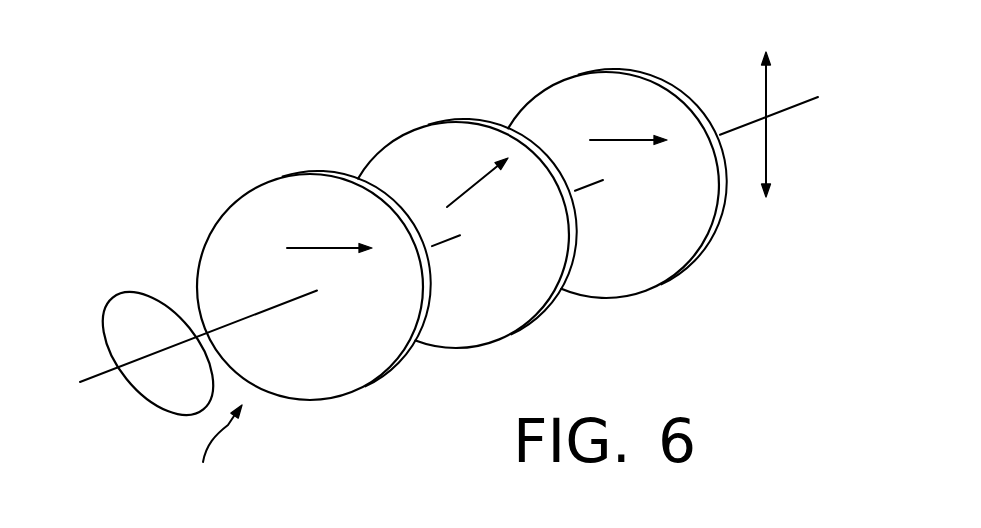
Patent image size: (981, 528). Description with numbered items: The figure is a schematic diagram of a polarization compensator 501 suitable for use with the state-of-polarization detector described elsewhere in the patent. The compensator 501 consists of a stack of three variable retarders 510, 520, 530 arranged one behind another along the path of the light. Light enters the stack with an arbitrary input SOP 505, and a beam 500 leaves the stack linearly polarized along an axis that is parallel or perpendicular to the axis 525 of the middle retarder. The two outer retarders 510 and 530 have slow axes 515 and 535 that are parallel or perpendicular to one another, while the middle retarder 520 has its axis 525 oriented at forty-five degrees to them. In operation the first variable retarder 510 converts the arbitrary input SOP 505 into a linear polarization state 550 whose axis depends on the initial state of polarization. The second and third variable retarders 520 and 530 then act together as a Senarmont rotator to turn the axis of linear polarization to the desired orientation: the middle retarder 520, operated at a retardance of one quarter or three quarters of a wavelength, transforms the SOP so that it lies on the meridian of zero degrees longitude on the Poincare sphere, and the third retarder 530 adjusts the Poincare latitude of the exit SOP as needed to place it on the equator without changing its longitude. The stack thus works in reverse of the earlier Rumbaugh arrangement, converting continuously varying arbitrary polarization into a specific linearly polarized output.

The beam 500 is at (807, 102).
The polarization compensator 501 is at (211, 447).
The arbitrary input SOP 505 is at (114, 298).
The variable retarder 510 is at (301, 400).
The slow axis 515 is at (305, 248).
The variable retarder 520 is at (453, 349).
The axis 525 is at (453, 202).
The variable retarder 530 is at (610, 297).
The slow axis 535 is at (597, 140).
The linear polarization state 550 is at (764, 167).